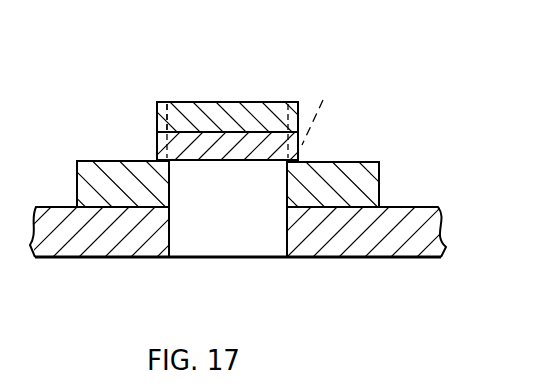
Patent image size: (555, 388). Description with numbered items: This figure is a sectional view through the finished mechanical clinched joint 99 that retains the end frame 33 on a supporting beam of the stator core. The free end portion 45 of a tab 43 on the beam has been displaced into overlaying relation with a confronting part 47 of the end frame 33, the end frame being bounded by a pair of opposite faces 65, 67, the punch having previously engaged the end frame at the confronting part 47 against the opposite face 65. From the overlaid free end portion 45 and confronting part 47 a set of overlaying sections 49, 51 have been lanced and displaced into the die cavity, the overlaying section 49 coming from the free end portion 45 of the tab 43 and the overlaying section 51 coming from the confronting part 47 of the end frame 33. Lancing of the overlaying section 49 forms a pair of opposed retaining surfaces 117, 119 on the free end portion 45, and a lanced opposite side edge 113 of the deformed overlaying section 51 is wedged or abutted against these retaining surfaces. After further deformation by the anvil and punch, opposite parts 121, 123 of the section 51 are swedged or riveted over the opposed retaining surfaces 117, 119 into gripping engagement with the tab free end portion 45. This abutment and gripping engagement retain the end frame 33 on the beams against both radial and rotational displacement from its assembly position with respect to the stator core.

The tab 43 is at (64, 176).
The lanced opposite side edge 113 is at (166, 135).
The opposite part of section 51 123 is at (158, 147).
The deformed overlaying section 51 is at (230, 135).
The deformed overlaying section 49 is at (268, 102).
The opposite part of section 51 121 is at (300, 154).
The free end portion 45 is at (380, 173).
The opposite face 67 is at (422, 207).
The end frame 33 is at (550, 244).
The opposite face 65 is at (420, 260).
The confronting part 47 is at (325, 248).
The mechanical clinched joint 99 is at (213, 264).
The opposed retaining surface 117 is at (260, 174).
The opposed retaining surface 119 is at (282, 203).